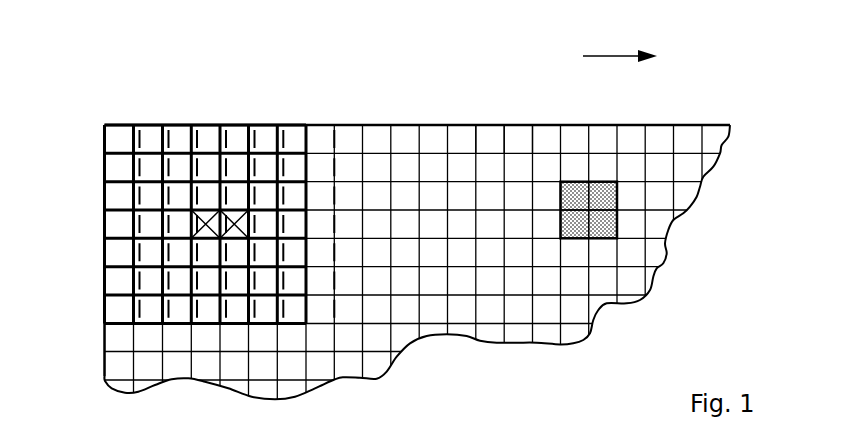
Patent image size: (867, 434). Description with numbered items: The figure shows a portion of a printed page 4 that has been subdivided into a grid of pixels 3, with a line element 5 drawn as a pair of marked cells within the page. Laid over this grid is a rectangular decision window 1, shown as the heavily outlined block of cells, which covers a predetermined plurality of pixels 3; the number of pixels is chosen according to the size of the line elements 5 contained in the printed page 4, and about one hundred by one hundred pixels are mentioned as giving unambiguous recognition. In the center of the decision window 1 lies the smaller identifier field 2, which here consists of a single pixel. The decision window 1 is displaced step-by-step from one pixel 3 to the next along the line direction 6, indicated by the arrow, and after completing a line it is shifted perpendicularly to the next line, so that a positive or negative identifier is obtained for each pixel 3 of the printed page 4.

The decision window 1 is at (162, 126).
The identifier field 2 is at (196, 233).
The pixels 3 is at (520, 137).
The printed page 4 is at (377, 124).
The line element 5 is at (603, 223).
The line direction 6 is at (608, 53).